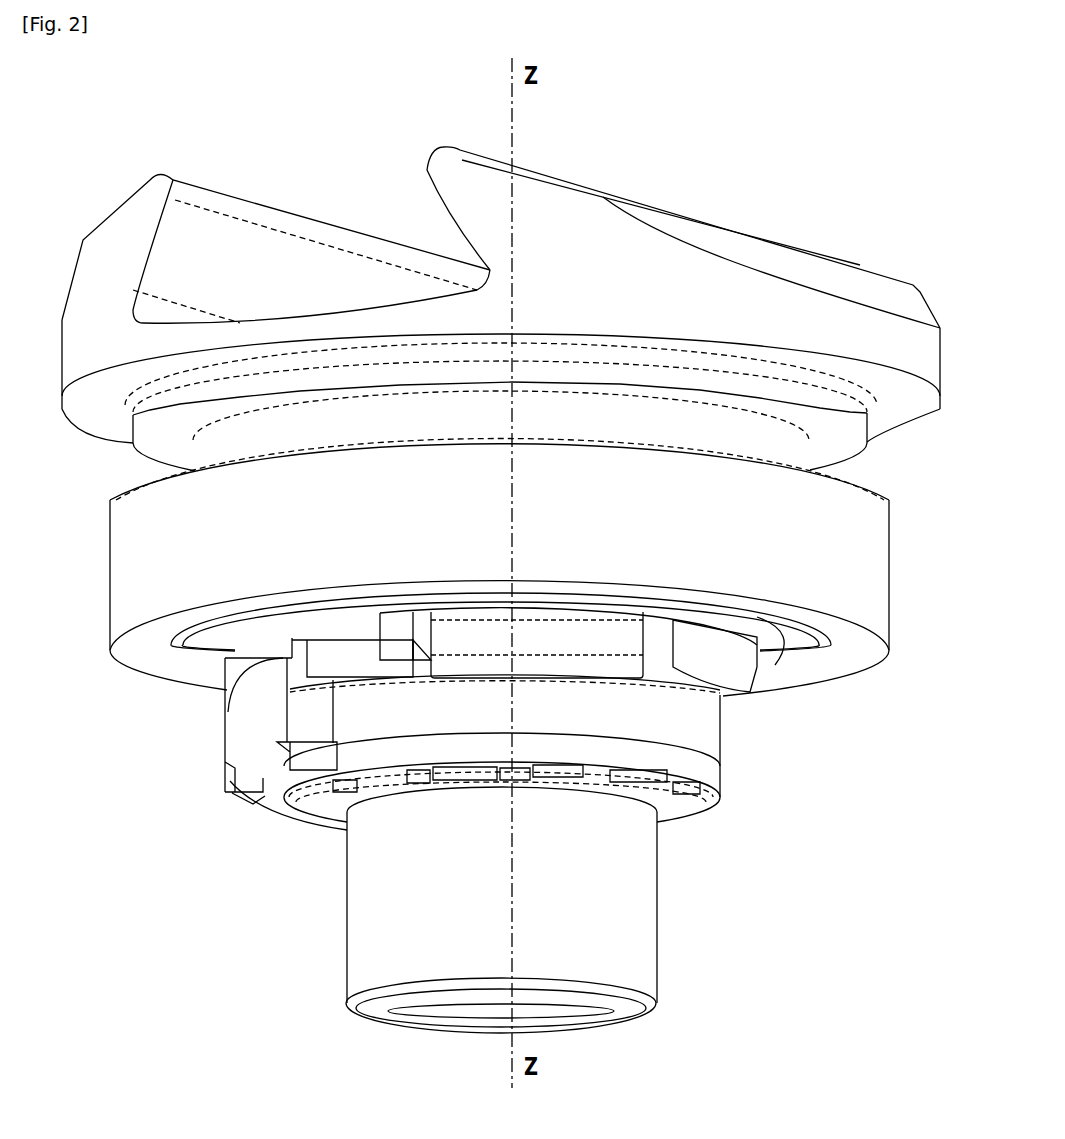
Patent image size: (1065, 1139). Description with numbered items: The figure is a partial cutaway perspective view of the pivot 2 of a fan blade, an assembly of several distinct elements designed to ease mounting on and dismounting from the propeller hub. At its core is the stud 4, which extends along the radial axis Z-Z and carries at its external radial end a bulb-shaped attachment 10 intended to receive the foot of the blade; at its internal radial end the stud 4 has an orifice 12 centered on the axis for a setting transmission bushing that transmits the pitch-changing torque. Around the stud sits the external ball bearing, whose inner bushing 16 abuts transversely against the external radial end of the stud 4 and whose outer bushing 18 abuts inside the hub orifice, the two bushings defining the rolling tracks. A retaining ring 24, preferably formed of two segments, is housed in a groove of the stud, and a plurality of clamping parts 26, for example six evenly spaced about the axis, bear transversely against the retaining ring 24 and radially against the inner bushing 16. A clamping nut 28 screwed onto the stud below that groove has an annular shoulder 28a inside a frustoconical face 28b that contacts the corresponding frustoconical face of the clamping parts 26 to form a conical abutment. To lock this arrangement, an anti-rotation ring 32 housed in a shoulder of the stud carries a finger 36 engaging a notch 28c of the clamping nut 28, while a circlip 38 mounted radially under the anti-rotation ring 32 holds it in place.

The pivot 2 is at (70, 488).
The stud 4 is at (534, 931).
The bulb-shaped attachment 10 is at (224, 250).
The orifice 12 is at (453, 1007).
The inner bushing 16 is at (763, 648).
The outer bushing 18 is at (852, 568).
The retaining ring 24 is at (420, 630).
The clamping parts 26 is at (345, 640).
The clamping nut 28 is at (280, 703).
The annular shoulder 28a is at (224, 708).
The frustoconical face 28b is at (318, 645).
The notch 28c is at (262, 808).
The anti-rotation ring 32 is at (713, 771).
The finger 36 is at (348, 760).
The circlip 38 is at (713, 802).